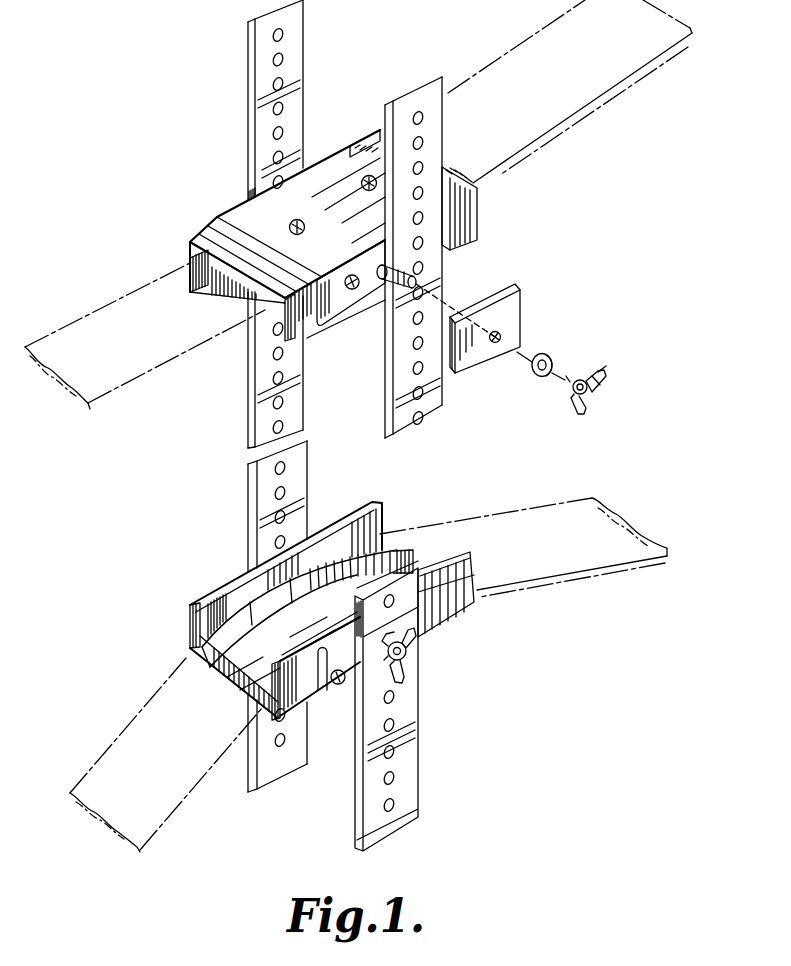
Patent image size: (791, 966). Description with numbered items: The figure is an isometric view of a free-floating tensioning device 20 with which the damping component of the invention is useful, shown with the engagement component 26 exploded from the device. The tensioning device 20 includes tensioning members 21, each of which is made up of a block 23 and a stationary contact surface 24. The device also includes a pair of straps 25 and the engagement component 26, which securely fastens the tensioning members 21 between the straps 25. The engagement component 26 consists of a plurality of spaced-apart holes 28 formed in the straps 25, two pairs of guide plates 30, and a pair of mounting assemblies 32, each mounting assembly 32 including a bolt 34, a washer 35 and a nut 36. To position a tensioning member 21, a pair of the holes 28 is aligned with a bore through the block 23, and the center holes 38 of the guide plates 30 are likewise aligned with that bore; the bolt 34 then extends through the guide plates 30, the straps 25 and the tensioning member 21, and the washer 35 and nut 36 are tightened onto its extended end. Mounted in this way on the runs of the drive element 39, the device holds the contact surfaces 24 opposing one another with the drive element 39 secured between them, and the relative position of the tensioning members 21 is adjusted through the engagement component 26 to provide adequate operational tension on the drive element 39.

The tensioning device 20 is at (205, 159).
The tensioning member 21 is at (492, 182).
The block 23 is at (213, 236).
The contact surface 24 is at (202, 666).
The strap 25 is at (248, 423).
The engagement component 26 is at (560, 242).
The hole 28 is at (283, 36).
The guide plate 30 is at (521, 297).
The mounting assembly 32 is at (570, 345).
The bolt 34 is at (422, 278).
The washer 35 is at (540, 378).
The nut 36 is at (576, 418).
The center hole 38 is at (501, 333).
The drive element 39 is at (93, 330).